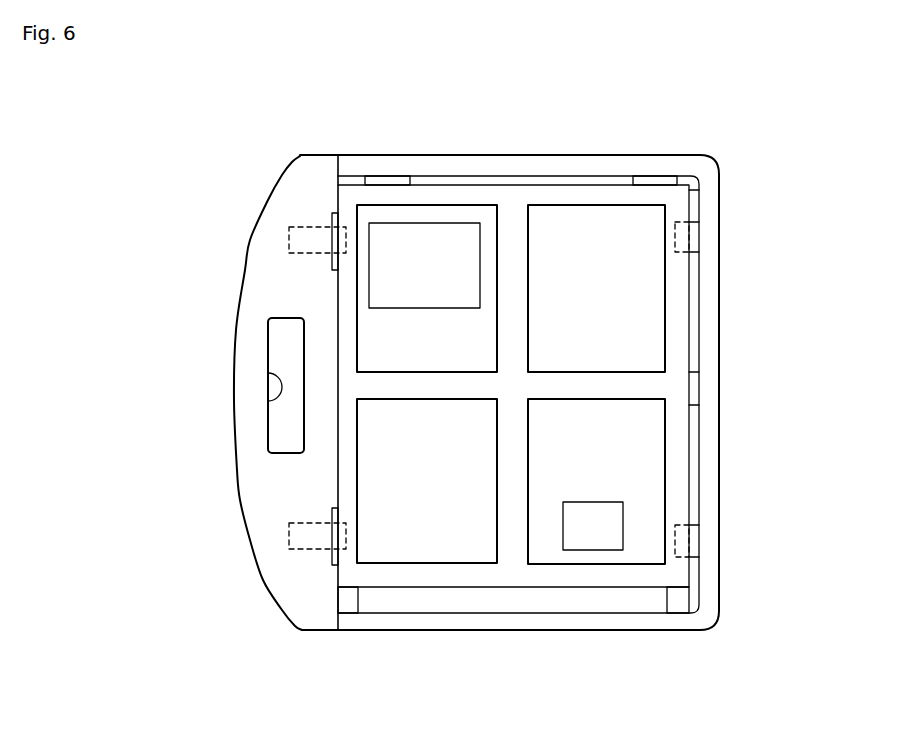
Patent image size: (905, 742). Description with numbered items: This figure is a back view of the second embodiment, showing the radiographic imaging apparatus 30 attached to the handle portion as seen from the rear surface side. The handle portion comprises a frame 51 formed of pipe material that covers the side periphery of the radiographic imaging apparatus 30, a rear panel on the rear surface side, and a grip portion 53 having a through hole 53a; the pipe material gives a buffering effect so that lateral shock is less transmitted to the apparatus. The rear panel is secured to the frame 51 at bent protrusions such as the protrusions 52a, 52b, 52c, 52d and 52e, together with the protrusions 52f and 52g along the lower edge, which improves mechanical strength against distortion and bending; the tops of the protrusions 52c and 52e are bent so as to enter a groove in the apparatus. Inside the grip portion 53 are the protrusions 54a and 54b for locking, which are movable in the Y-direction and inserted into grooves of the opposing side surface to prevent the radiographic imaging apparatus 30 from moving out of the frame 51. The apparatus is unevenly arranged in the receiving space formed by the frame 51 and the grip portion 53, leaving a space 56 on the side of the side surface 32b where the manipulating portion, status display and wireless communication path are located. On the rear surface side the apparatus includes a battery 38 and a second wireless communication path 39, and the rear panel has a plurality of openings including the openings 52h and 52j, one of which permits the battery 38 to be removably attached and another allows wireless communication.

The grip portion 53 is at (277, 197).
The through hole 53a is at (270, 396).
The protrusion for locking 54a is at (300, 246).
The protrusion for locking 54b is at (290, 540).
The frame 51 is at (493, 168).
The protrusion 52a is at (386, 179).
The protrusion 52b is at (651, 178).
The protrusion 52c is at (697, 238).
The protrusion 52d is at (697, 388).
The protrusion 52e is at (697, 548).
The protrusion 52f is at (680, 600).
The protrusion 52g is at (345, 600).
The opening 52h is at (667, 455).
The opening 52j is at (432, 204).
The battery 38 is at (481, 255).
The second wireless communication path 39 is at (625, 520).
The radiographic imaging apparatus 30 is at (443, 553).
The side surface 32b is at (490, 587).
The space 56 is at (575, 600).